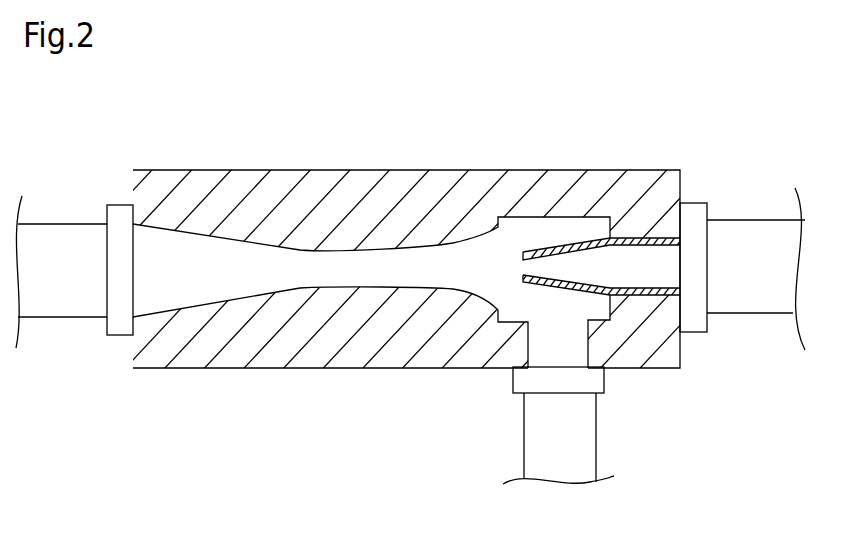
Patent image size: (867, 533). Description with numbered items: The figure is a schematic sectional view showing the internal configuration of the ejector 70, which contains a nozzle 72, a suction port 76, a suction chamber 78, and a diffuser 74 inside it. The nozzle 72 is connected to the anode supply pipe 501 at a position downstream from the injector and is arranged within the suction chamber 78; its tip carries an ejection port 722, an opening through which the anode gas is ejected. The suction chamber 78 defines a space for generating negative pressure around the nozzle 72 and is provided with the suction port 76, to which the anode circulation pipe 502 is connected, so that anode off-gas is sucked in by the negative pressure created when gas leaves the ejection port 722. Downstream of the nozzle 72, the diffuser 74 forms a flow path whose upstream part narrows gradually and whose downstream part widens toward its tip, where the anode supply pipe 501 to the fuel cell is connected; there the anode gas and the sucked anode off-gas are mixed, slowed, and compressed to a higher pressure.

The ejector 70 is at (654, 137).
The nozzle 72 is at (646, 296).
The ejection port 722 is at (523, 252).
The diffuser 74 is at (342, 250).
The suction port 76 is at (528, 350).
The suction chamber 78 is at (588, 215).
The anode supply pipe 501 is at (58, 223).
The anode circulation pipe 502 is at (597, 437).